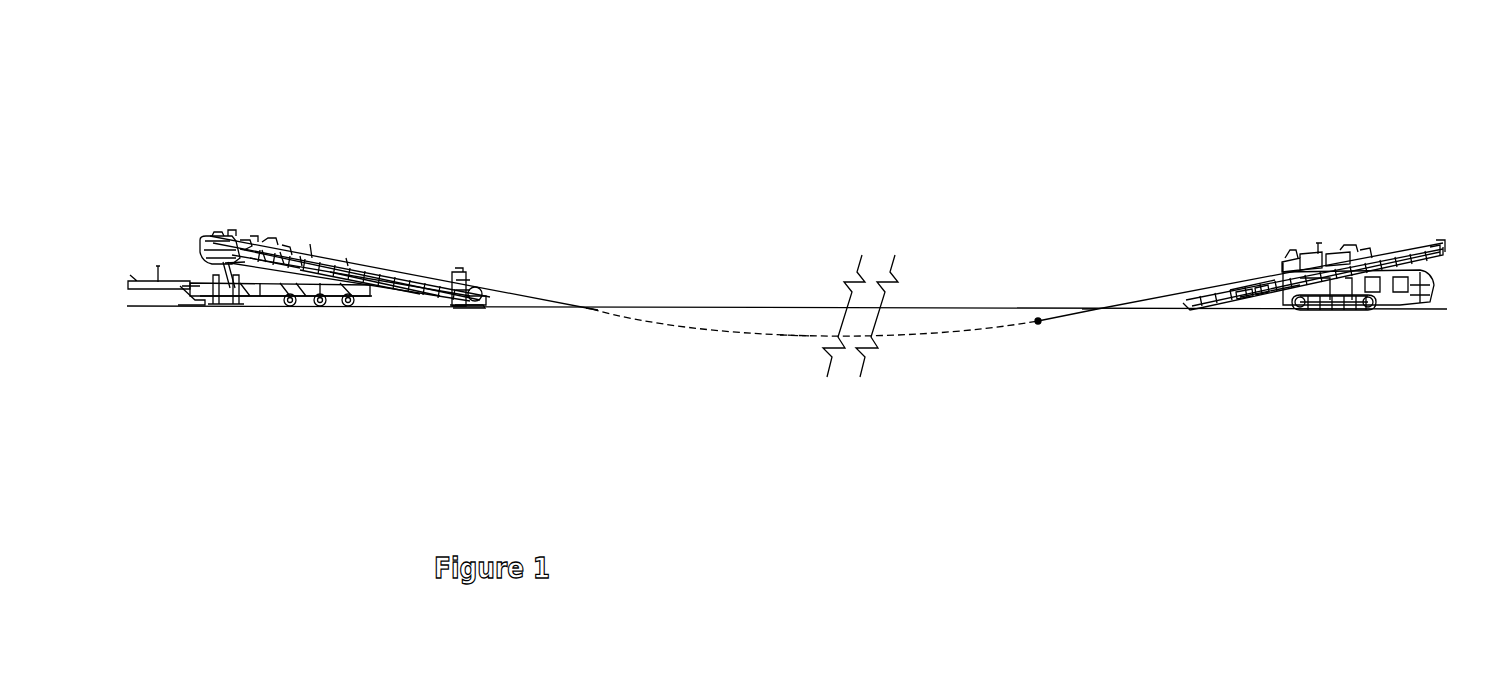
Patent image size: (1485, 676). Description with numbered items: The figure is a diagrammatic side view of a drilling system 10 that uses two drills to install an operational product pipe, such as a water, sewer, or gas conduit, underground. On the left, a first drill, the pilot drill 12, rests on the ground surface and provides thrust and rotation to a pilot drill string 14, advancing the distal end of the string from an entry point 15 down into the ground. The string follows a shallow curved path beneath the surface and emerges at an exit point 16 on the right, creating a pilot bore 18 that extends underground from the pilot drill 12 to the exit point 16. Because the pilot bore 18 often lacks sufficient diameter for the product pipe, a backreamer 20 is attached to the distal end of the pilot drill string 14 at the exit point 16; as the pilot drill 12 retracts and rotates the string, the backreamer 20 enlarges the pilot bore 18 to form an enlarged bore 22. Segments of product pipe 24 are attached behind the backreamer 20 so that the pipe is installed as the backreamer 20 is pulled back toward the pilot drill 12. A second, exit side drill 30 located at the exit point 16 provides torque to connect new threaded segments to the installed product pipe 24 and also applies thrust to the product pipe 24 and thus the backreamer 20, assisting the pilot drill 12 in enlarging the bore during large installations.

The drilling system 10 is at (815, 128).
The pilot drill 12 is at (209, 188).
The pilot drill string 14 is at (703, 346).
The entry point 15 is at (607, 298).
The exit point 16 is at (1086, 289).
The pilot bore 18 is at (796, 336).
The backreamer 20 is at (1045, 324).
The enlarged bore 22 is at (1083, 311).
The product pipe 24 is at (1200, 285).
The exit side drill 30 is at (1382, 207).